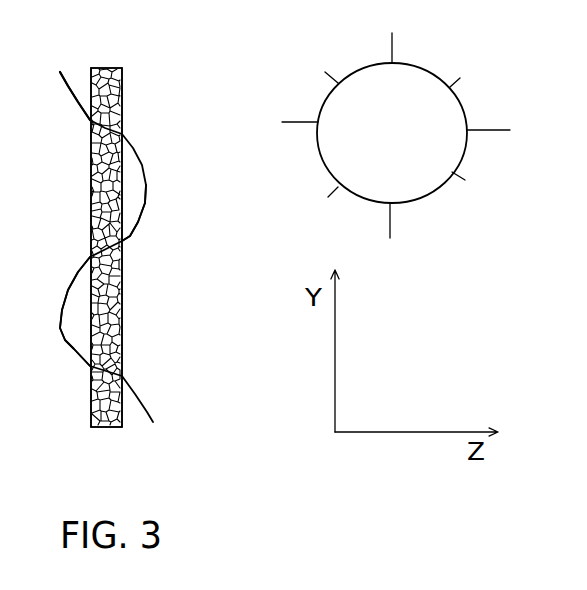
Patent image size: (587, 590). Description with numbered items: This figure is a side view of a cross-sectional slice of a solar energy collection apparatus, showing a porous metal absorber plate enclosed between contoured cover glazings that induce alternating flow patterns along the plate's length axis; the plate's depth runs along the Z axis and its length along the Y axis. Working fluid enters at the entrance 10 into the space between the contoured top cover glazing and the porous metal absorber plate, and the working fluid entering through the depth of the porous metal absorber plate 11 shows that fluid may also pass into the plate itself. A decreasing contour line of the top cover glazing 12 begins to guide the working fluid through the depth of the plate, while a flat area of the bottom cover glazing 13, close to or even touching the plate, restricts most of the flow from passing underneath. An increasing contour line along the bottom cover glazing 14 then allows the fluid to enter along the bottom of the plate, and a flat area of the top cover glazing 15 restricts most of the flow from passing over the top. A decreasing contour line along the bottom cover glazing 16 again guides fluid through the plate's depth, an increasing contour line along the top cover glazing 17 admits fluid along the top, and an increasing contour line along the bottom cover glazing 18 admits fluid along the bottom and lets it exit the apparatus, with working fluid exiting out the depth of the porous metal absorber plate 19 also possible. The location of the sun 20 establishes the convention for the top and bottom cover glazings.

The entrance for working fluid 10 is at (130, 425).
The working fluid entering through the depth of the porous metal absorber plate 11 is at (103, 437).
The decreasing contour line of the top cover glazing 12 is at (148, 156).
The flat area of the bottom cover glazing 13 is at (82, 180).
The increasing contour line along the bottom cover glazing 14 is at (59, 341).
The flat area of the top cover glazing 15 is at (132, 103).
The decreasing contour line along the bottom cover glazing 16 is at (60, 271).
The increasing contour line along the top cover glazing 17 is at (146, 245).
The increasing contour line along the bottom cover glazing 18 is at (75, 66).
The working fluid exiting out the depth of the porous metal absorber plate 19 is at (109, 58).
The location of the sun 20 is at (315, 159).